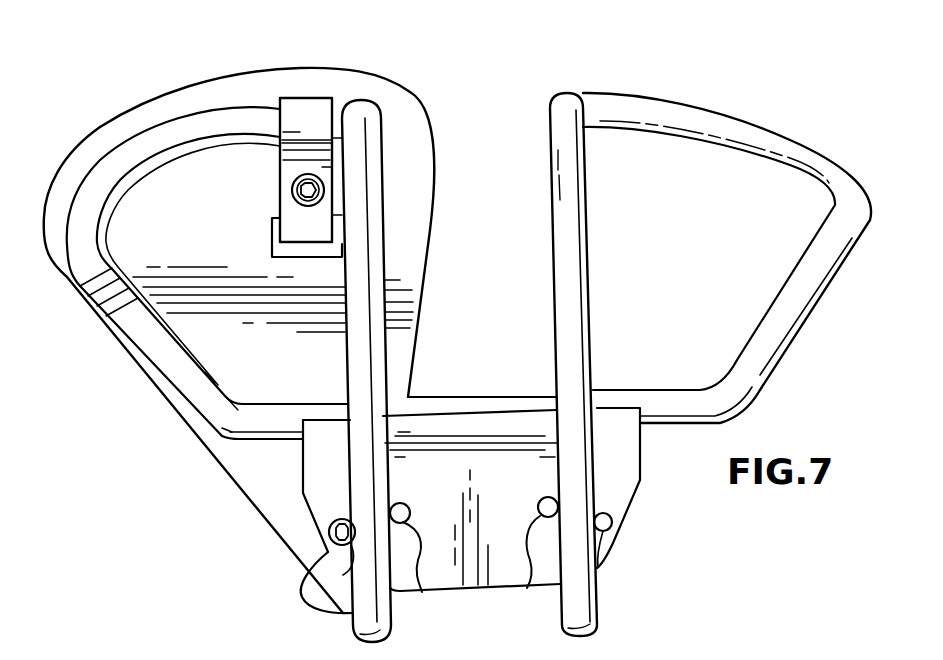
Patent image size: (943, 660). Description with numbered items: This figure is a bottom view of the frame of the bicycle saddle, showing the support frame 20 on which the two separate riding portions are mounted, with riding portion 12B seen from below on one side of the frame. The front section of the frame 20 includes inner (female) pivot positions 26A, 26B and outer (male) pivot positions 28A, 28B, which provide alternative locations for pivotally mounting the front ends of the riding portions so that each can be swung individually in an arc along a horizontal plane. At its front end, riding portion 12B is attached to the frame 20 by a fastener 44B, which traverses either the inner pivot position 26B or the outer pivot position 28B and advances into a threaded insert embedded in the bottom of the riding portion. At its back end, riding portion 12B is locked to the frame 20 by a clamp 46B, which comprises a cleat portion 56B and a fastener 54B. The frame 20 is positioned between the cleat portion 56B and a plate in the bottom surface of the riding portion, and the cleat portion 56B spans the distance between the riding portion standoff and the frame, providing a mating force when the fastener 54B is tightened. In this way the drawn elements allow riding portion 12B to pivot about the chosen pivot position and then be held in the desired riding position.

The riding portion 12B is at (110, 117).
The support frame 20 is at (773, 367).
The clamp 46B is at (305, 98).
The cleat portion 56B is at (280, 168).
The fastener 54B is at (282, 192).
The fastener 44B is at (330, 553).
The outer pivot position 28B is at (328, 527).
The inner pivot position 26B is at (418, 592).
The inner pivot position 26A is at (531, 588).
The outer pivot position 28A is at (613, 524).